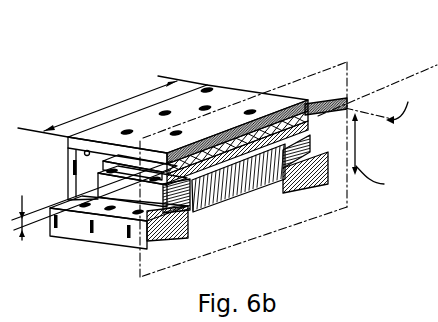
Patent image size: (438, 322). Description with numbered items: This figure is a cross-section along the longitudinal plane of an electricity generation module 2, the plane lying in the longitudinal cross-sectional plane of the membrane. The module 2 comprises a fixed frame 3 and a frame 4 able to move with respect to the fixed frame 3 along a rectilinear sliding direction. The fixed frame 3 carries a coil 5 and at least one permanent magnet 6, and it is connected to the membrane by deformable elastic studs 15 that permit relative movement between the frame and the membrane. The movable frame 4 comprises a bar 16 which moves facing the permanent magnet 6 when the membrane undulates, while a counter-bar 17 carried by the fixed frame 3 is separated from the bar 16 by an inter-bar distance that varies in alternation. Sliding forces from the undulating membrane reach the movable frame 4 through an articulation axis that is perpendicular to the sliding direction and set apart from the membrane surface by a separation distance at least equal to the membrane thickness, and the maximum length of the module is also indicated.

The electricity generation module 2 is at (125, 59).
The fixed frame 3 is at (247, 120).
The movable frame 4 is at (318, 97).
The coil 5 is at (198, 197).
The permanent magnet 6 is at (246, 145).
The elastic stud 15 is at (329, 153).
The bar 16 is at (327, 104).
The counter-bar 17 is at (206, 85).